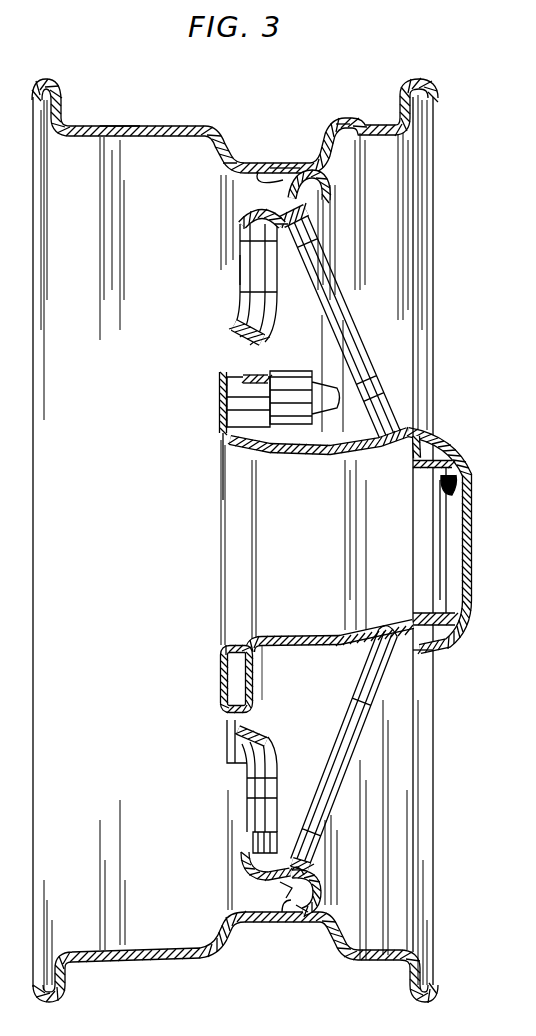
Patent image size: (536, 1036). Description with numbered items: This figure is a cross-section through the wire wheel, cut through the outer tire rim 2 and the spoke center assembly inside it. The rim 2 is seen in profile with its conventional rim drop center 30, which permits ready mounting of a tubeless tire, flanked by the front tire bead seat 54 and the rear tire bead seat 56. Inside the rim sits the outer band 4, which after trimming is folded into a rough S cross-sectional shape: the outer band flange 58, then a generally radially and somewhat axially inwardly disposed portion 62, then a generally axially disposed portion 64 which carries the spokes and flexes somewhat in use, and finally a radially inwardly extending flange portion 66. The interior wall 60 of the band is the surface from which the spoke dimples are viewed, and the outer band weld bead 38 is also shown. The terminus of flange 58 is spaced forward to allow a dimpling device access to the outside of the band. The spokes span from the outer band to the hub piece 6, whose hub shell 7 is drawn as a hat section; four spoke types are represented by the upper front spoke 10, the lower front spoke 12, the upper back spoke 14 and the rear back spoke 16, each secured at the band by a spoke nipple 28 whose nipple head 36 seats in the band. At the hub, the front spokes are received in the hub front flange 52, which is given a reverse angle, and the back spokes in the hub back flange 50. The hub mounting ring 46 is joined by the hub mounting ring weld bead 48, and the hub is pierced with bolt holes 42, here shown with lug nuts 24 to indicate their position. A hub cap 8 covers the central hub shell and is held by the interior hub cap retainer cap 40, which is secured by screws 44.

The outer tire rim 2 is at (418, 79).
The outer band 4 is at (330, 184).
The hub piece 6 is at (330, 453).
The hub shell 7 is at (322, 634).
The hub cap 8 is at (457, 473).
The upper front spoke 10 is at (363, 347).
The lower front spoke 12 is at (297, 260).
The upper back spoke 14 is at (268, 337).
The rear back spoke 16 is at (252, 264).
The lug nut 24 is at (290, 371).
The spoke nipple 28 is at (288, 833).
The rim drop center 30 is at (284, 167).
The nipple head 36 is at (285, 887).
The outer band weld bead 38 is at (258, 172).
The interior hub cap retainer cap 40 is at (462, 524).
The bolt holes 42 is at (222, 406).
The screws 44 is at (470, 480).
The hub mounting ring 46 is at (224, 712).
The hub mounting ring weld bead 48 is at (232, 372).
The hub back flange 50 is at (232, 325).
The hub front flange 52 is at (416, 652).
The front tire bead seat 54 is at (346, 120).
The rear tire bead seat 56 is at (118, 126).
The outer band flange 58 is at (299, 912).
The interior wall 60 is at (302, 678).
The generally radially disposed portion 62 is at (322, 910).
The generally axially disposed portion 64 is at (318, 872).
The radially inwardly extending flange portion 66 is at (257, 876).